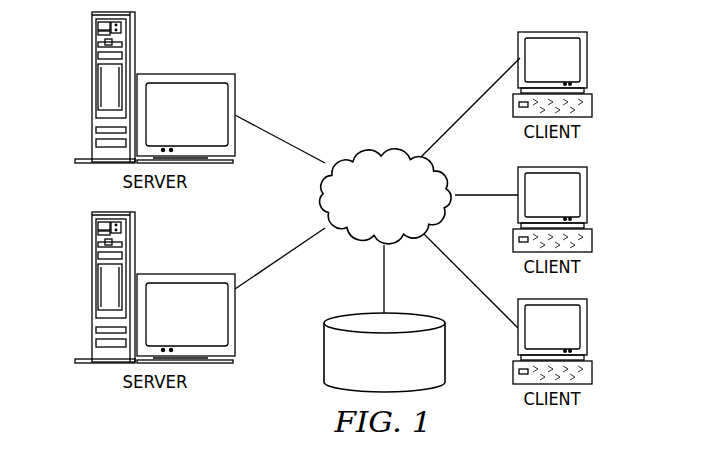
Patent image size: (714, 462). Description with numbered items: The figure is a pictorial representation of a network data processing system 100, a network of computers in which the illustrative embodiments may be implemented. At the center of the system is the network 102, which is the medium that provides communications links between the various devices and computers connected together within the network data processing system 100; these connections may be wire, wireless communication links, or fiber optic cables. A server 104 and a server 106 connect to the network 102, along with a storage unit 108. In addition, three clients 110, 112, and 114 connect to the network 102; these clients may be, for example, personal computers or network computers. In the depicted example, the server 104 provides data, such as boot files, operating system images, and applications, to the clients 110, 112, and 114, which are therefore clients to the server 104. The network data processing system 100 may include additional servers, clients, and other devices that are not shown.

The network data processing system 100 is at (433, 50).
The network 102 is at (355, 148).
The server 104 is at (92, 88).
The server 106 is at (92, 287).
The storage unit 108 is at (324, 362).
The client 110 is at (588, 62).
The client 112 is at (588, 197).
The client 114 is at (588, 328).